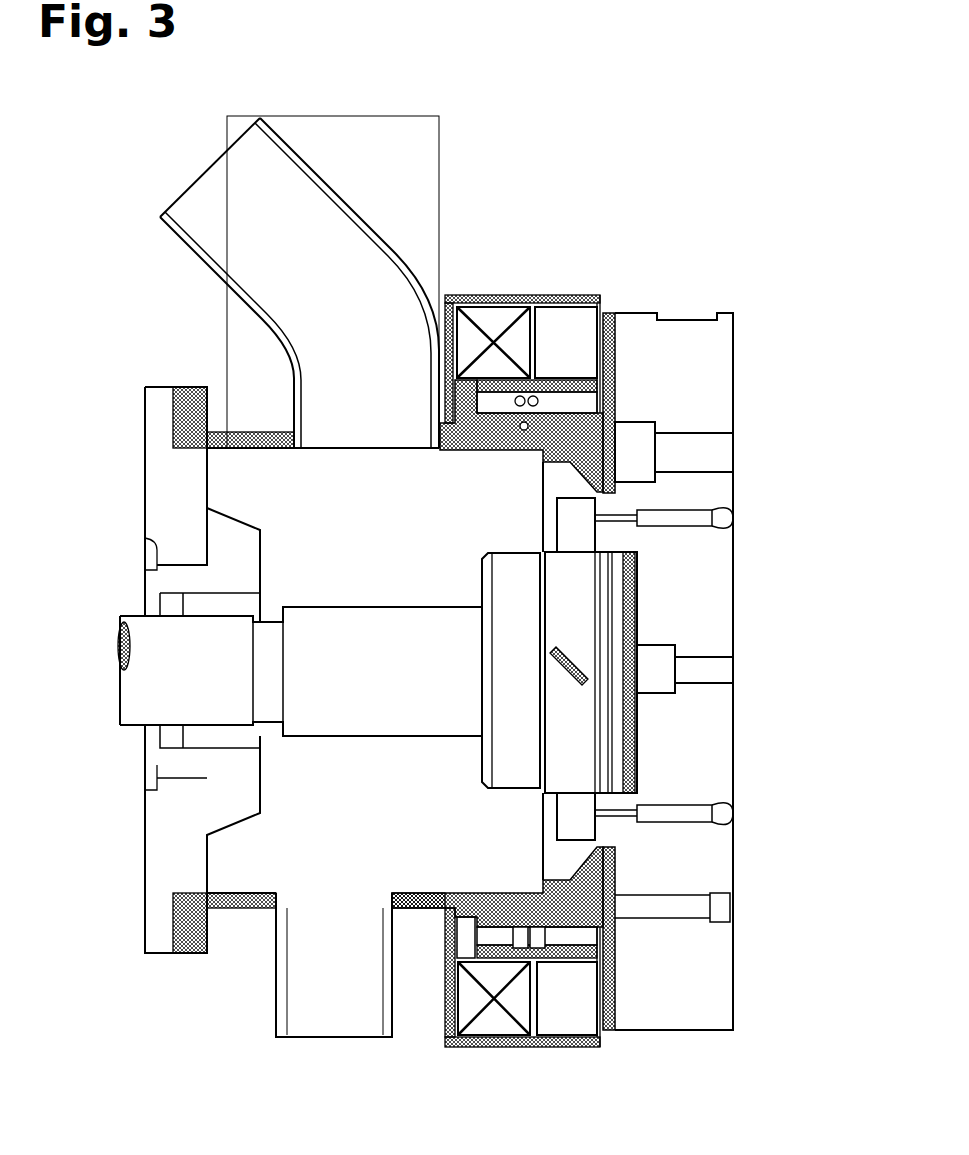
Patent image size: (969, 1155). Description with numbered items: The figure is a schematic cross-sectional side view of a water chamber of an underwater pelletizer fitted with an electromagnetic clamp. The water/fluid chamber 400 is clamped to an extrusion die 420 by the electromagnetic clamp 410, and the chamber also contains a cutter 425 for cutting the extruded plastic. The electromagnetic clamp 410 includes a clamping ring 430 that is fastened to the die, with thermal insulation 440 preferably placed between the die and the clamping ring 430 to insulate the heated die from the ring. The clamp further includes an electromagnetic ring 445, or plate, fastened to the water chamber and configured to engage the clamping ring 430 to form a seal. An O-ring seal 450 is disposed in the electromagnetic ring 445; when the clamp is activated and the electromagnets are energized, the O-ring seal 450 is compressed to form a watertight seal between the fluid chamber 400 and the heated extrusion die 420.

The water/fluid chamber 400 is at (248, 913).
The electromagnetic clamp 410 is at (603, 283).
The extrusion die 420 is at (693, 755).
The cutter 425 is at (432, 635).
The clamping ring 430 is at (570, 330).
The thermal insulation 440 is at (608, 313).
The electromagnetic ring 445 is at (493, 318).
The O-ring seal 450 is at (507, 450).